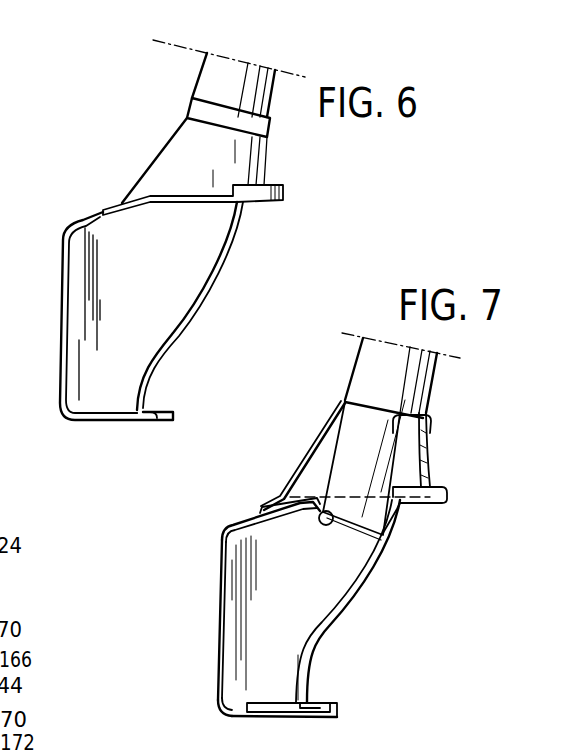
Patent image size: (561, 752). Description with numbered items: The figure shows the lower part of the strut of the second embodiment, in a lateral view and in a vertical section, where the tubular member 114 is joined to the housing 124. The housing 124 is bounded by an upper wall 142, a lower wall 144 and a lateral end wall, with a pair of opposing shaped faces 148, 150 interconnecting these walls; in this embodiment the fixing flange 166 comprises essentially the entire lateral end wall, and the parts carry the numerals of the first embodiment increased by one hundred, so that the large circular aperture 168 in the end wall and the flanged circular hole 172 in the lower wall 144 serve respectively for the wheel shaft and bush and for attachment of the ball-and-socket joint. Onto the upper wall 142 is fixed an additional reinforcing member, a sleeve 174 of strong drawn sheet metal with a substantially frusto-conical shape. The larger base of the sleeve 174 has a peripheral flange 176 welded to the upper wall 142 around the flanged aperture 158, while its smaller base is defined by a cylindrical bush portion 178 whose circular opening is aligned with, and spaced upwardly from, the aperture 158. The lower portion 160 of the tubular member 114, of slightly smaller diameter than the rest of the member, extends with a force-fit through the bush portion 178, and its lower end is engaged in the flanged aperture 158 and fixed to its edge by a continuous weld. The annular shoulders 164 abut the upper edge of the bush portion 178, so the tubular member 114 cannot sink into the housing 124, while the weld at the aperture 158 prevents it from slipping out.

In FIG. 6, the tubular member 114 is at (208, 87).
In FIG. 7, the tubular member 114 is at (437, 385).
In FIG. 6, the housing 124 is at (207, 287).
In FIG. 7, the housing 124 is at (377, 568).
In FIG. 6, the upper wall 142 is at (77, 223).
In FIG. 7, the upper wall 142 is at (232, 532).
In FIG. 6, the lower wall 144 is at (107, 423).
In FIG. 7, the lower wall 144 is at (232, 714).
In FIG. 6, the shaped face 148 is at (83, 333).
In FIG. 7, the shaped face 150 is at (293, 640).
In FIG. 7, the flanged aperture 158 is at (330, 524).
In FIG. 7, the lower portion 160 is at (380, 467).
In FIG. 7, the annular shoulders 164 is at (395, 428).
In FIG. 7, the fixing flange 166 is at (218, 683).
In FIG. 7, the circular aperture 168 is at (222, 575).
In FIG. 7, the flanged circular hole 172 is at (310, 698).
In FIG. 6, the sleeve 174 is at (178, 145).
In FIG. 7, the sleeve 174 is at (323, 440).
In FIG. 6, the peripheral flange 176 is at (117, 203).
In FIG. 7, the peripheral flange 176 is at (268, 508).
In FIG. 6, the cylindrical bush portion 178 is at (247, 120).
In FIG. 7, the cylindrical bush portion 178 is at (345, 398).